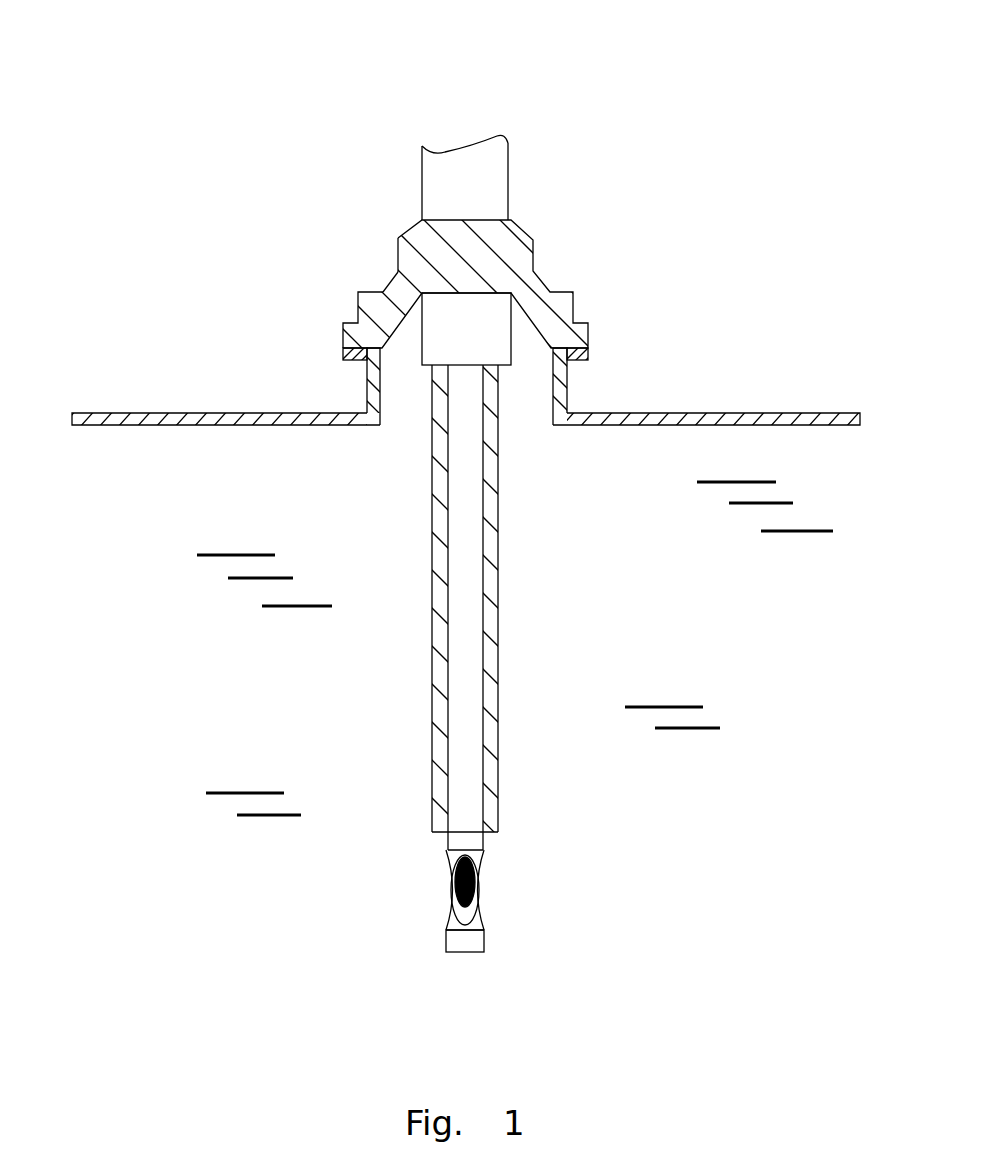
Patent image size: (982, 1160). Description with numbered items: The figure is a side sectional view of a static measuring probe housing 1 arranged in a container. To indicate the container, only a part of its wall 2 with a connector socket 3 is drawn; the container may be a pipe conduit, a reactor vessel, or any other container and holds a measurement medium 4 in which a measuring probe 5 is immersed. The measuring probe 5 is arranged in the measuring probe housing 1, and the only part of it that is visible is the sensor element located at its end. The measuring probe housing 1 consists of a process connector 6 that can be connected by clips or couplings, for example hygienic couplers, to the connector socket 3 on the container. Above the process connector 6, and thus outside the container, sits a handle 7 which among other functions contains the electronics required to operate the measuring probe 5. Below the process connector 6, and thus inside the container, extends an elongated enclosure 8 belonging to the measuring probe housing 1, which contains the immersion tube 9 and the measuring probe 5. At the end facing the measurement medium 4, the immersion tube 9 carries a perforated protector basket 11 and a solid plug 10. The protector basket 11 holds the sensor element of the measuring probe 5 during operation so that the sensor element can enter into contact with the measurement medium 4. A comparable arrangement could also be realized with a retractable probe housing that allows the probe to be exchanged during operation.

The measuring probe housing 1 is at (622, 262).
The wall 2 is at (788, 418).
The connector socket 3 is at (340, 353).
The measurement medium 4 is at (212, 612).
The measuring probe 5 is at (473, 883).
The process connector 6 is at (354, 292).
The handle 7 is at (467, 183).
The elongated enclosure 8 is at (492, 724).
The immersion tube 9 is at (462, 672).
The solid plug 10 is at (473, 944).
The protector basket 11 is at (418, 896).